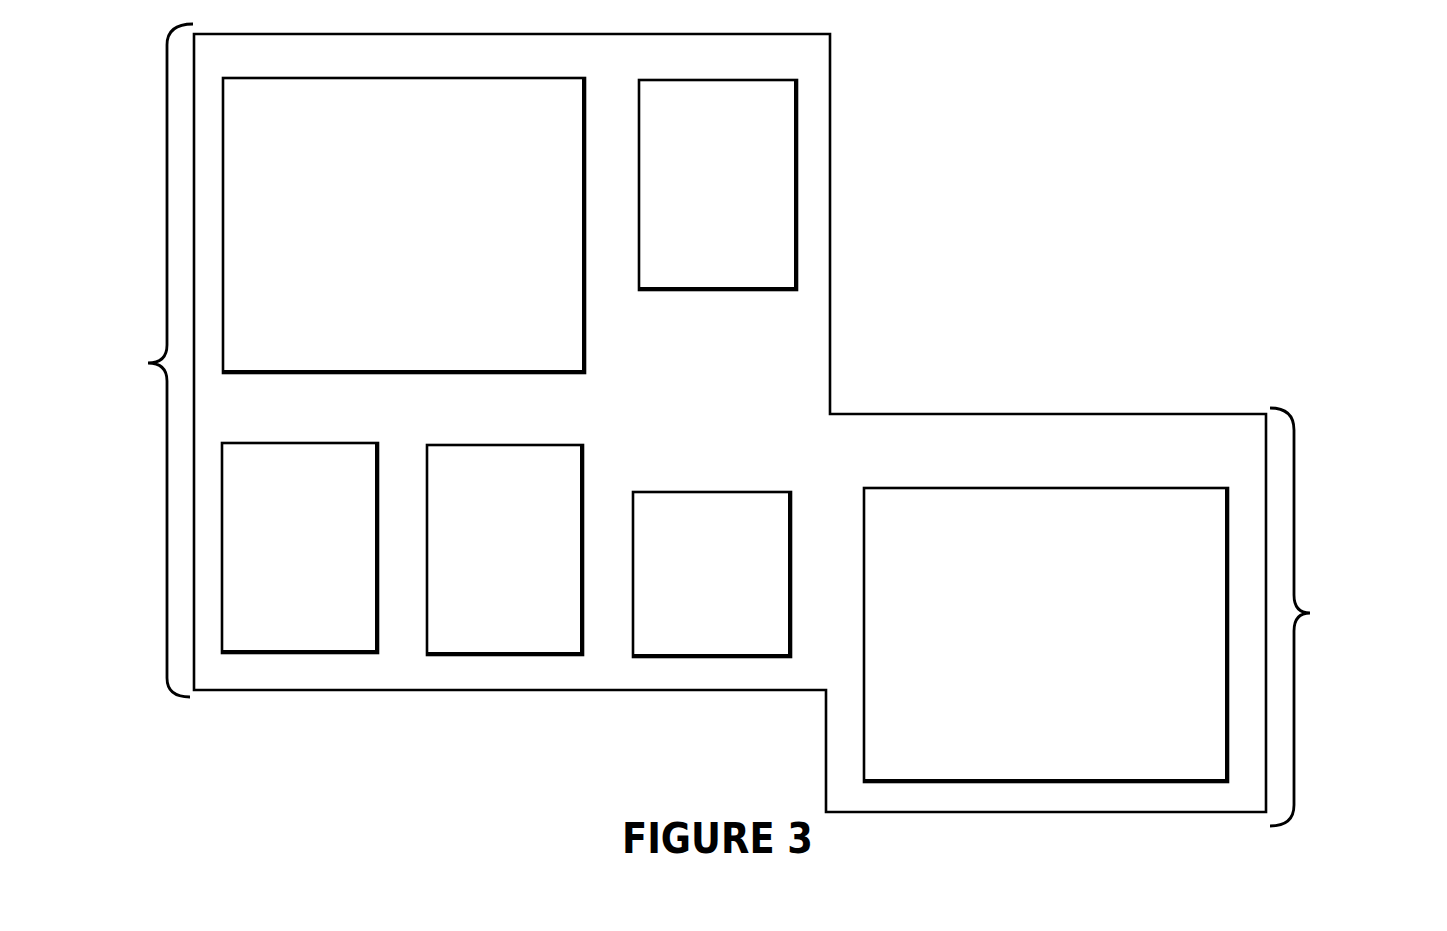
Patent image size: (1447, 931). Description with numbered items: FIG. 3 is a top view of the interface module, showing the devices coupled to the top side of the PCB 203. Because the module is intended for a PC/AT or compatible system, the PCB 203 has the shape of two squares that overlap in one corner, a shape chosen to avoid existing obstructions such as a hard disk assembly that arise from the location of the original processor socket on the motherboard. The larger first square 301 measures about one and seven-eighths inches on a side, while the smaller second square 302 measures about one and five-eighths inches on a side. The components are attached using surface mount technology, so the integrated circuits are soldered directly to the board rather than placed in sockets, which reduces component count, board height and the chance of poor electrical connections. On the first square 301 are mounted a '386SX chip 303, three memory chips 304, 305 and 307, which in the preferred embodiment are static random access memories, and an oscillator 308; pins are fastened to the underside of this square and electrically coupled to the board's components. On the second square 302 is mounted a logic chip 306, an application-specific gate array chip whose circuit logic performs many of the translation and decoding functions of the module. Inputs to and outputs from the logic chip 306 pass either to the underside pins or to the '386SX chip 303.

The PCB 203 is at (831, 199).
The first square 301 is at (115, 360).
The second square 302 is at (1346, 617).
The '386SX chip 303 is at (588, 89).
The memory chip 304 is at (360, 442).
The memory chip 305 is at (557, 444).
The logic chip 306 is at (1148, 487).
The memory chip 307 is at (772, 79).
The oscillator 308 is at (765, 491).